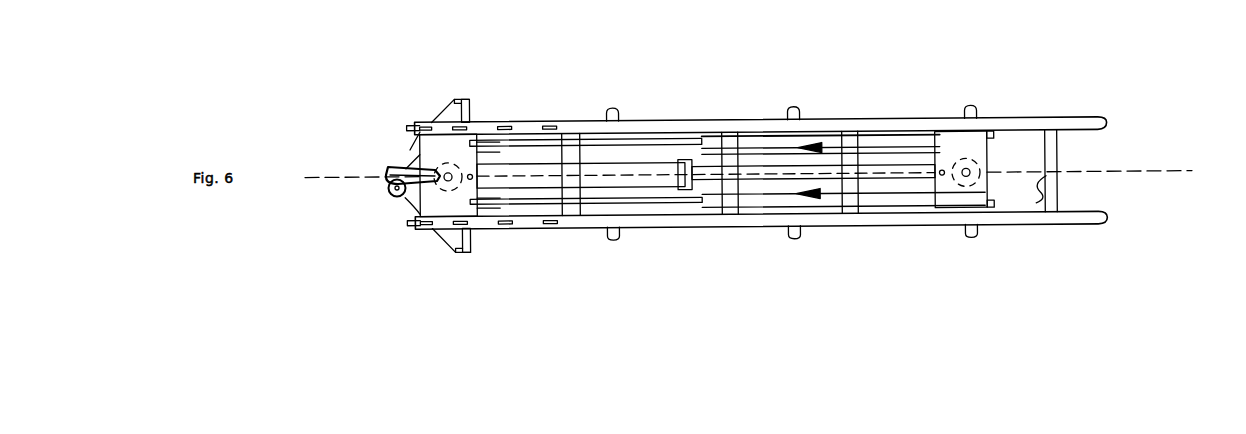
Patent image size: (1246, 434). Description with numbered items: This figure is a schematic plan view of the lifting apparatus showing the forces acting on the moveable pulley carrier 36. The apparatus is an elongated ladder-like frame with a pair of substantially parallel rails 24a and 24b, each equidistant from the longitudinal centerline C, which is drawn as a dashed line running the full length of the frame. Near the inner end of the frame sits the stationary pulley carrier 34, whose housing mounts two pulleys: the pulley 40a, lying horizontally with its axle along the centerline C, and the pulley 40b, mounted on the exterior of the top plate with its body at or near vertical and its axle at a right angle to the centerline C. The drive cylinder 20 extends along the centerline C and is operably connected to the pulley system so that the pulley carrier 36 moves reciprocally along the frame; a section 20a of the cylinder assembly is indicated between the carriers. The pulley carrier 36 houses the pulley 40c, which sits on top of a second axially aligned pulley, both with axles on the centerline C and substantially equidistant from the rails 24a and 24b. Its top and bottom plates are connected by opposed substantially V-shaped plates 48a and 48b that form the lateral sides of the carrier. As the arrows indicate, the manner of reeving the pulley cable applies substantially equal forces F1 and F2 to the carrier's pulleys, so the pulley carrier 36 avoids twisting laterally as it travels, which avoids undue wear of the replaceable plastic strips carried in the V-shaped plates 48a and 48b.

The drive cylinder 20 is at (527, 163).
The inner member 20a is at (755, 166).
The rail 24a is at (717, 224).
The rail 24b is at (867, 120).
The stationary pulley carrier 34 is at (500, 222).
The pulley carrier 36 is at (641, 158).
The pulley 40a is at (413, 152).
The pulley 40b is at (402, 203).
The pulley 40c is at (985, 155).
The V-shaped plate 48a is at (981, 135).
The V-shaped plate 48b is at (983, 212).
The force F1 is at (807, 200).
The force F2 is at (810, 147).
The longitudinal centerline C is at (323, 177).